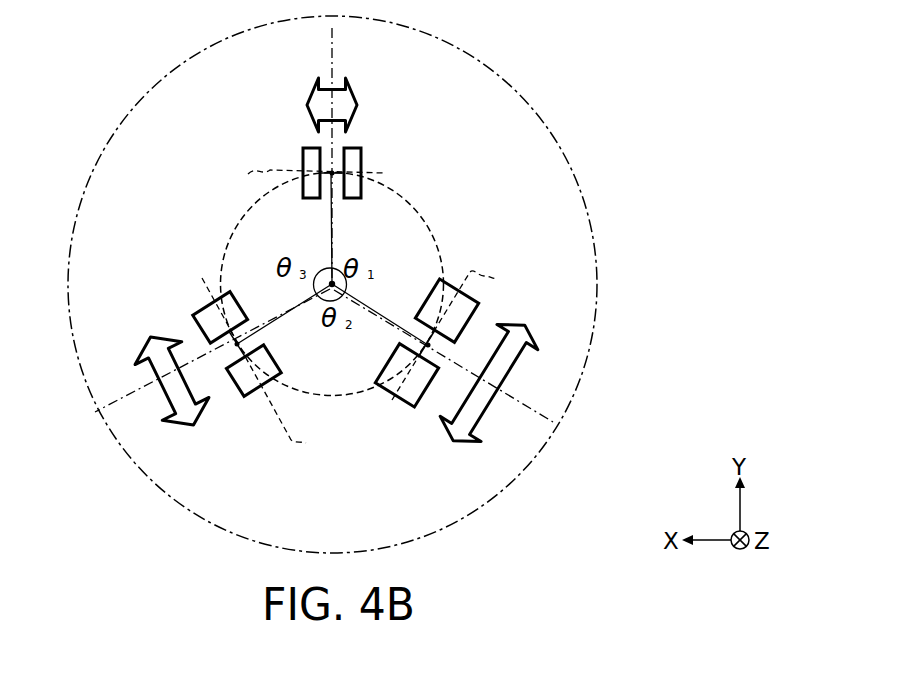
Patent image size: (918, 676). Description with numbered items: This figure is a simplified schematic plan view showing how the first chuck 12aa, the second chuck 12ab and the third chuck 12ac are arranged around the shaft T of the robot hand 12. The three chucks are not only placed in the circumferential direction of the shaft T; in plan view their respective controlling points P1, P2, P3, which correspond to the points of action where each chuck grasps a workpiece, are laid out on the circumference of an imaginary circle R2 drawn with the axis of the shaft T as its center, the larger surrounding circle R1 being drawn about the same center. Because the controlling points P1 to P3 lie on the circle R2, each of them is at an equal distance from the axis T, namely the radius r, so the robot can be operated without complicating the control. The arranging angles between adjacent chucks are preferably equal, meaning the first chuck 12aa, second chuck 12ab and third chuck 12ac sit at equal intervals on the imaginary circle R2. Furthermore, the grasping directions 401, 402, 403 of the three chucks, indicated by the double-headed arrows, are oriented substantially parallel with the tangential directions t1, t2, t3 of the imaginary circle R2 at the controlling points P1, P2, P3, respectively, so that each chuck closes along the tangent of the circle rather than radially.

The rotary stage 12 is at (569, 64).
The first chuck 12aa is at (296, 157).
The second chuck 12ab is at (240, 406).
The third chuck 12ac is at (482, 302).
The grasping direction 401 is at (358, 93).
The grasping direction 402 is at (157, 386).
The grasping direction 403 is at (492, 410).
The controlling point P1 is at (332, 172).
The controlling point P2 is at (236, 343).
The controlling point P3 is at (428, 345).
The tangential direction t1 is at (303, 173).
The tangential direction t2 is at (266, 368).
The tangential direction t3 is at (458, 334).
The outer radius circle R1 is at (590, 222).
The imaginary circle R2 is at (420, 188).
The shaft T is at (333, 282).
The radius r is at (332, 259).